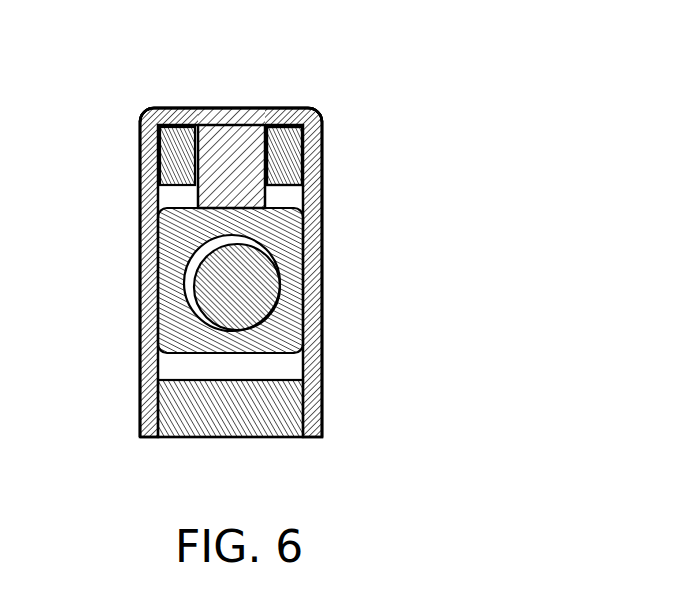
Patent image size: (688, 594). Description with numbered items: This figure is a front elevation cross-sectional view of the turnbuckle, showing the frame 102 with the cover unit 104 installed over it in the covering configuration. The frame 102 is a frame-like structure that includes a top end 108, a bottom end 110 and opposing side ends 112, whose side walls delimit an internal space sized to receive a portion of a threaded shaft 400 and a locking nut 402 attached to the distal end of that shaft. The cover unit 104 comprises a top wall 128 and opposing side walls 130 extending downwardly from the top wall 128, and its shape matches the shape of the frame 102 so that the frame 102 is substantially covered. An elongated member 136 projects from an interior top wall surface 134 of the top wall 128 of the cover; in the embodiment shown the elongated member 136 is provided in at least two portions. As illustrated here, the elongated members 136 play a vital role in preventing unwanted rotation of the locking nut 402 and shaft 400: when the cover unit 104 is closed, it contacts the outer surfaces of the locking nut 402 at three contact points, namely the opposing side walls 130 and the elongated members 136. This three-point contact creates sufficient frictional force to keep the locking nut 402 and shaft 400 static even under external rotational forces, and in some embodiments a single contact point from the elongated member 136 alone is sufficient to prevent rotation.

The frame 102 is at (118, 443).
The cover unit 104 is at (405, 92).
The top end 108 is at (168, 108).
The bottom end 110 is at (293, 437).
The opposing side ends 112 is at (140, 168).
The top wall 128 is at (207, 108).
The opposing side walls 130 is at (322, 268).
The interior top wall surface 134 is at (270, 131).
The elongated member 136 is at (162, 217).
The threaded shaft 400 is at (278, 285).
The locking nut 402 is at (290, 355).